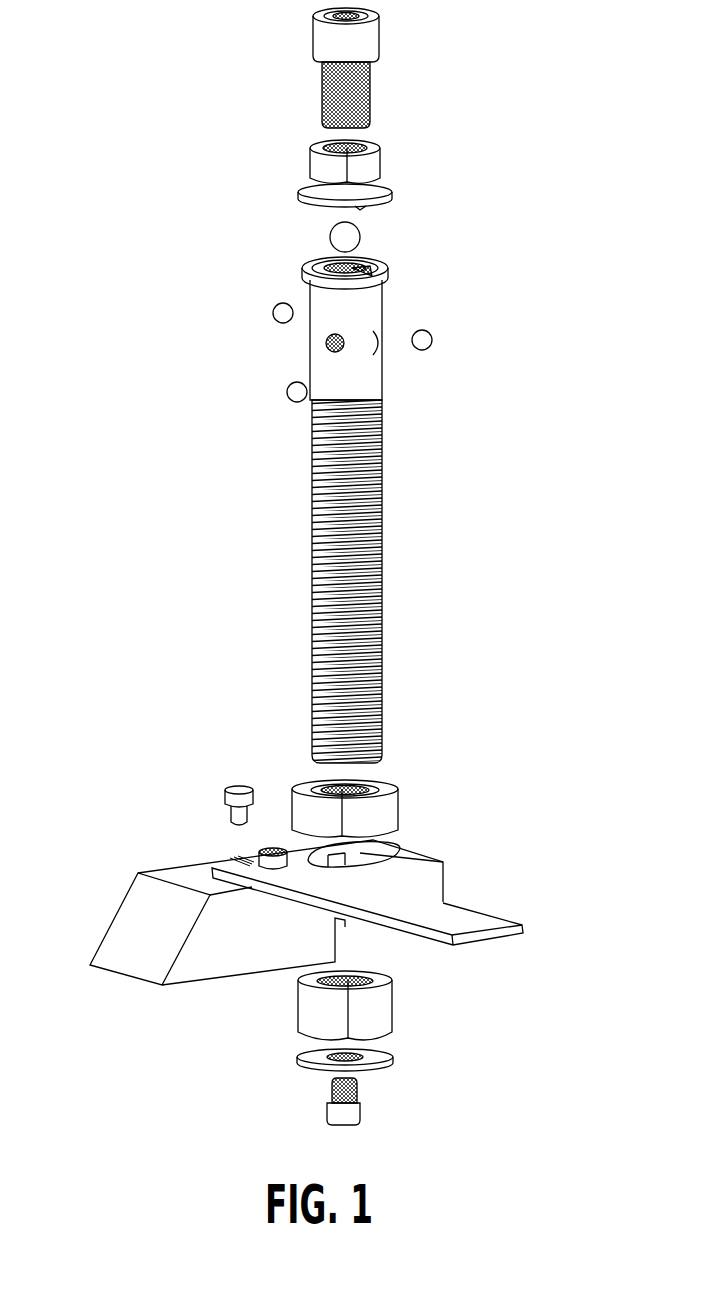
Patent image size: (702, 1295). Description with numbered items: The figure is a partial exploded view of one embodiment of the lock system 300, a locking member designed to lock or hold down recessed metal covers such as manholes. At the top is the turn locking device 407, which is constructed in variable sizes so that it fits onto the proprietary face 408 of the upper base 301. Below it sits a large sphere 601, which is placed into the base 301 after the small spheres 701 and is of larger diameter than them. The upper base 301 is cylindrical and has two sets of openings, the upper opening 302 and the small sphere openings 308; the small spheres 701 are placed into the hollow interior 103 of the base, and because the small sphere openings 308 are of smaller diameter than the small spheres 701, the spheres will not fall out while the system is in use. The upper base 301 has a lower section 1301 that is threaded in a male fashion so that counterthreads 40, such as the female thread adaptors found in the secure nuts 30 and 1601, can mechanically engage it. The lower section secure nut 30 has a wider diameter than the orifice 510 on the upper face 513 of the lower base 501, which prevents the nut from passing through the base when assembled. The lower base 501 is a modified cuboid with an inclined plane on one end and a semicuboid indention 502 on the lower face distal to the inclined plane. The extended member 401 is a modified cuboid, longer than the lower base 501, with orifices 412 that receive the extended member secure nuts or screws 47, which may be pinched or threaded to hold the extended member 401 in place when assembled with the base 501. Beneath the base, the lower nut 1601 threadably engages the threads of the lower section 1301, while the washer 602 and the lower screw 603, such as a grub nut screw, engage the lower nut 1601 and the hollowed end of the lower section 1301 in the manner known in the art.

The turn locking device 407 is at (400, 80).
The large sphere 601 is at (360, 238).
The upper opening 302 is at (335, 262).
The hollow interior 103 is at (378, 260).
The proprietary face 408 is at (390, 278).
The small spheres 701 is at (273, 313).
The small sphere openings 308 is at (325, 345).
The upper base 301 is at (382, 390).
The lock system 300 is at (350, 581).
The lower section 1301 is at (312, 557).
The extended member secure nut 47 is at (237, 783).
The female thread adaptor 40 is at (362, 784).
The lower section secure nut 30 is at (372, 795).
The orifice 510 is at (393, 848).
The orifice 412 is at (237, 860).
The upper face 513 is at (120, 902).
The lower base 501 is at (258, 924).
The semicuboid indention 502 is at (358, 937).
The extended member 401 is at (392, 896).
The lower nut 1601 is at (392, 1005).
The washer 602 is at (390, 1062).
The lower screw 603 is at (365, 1112).